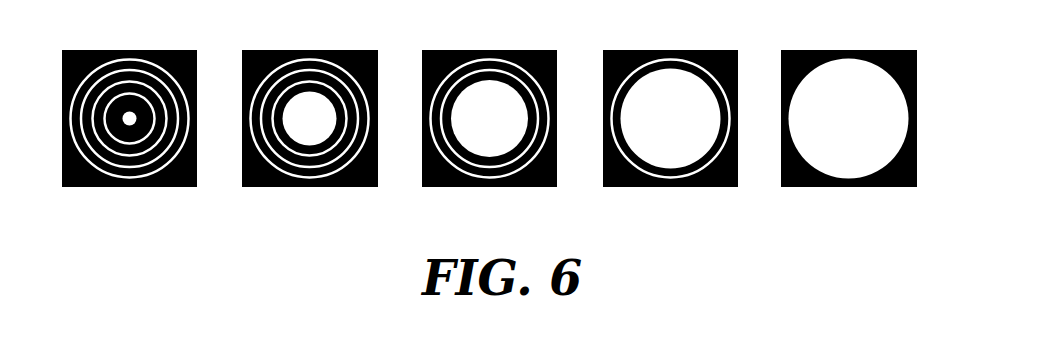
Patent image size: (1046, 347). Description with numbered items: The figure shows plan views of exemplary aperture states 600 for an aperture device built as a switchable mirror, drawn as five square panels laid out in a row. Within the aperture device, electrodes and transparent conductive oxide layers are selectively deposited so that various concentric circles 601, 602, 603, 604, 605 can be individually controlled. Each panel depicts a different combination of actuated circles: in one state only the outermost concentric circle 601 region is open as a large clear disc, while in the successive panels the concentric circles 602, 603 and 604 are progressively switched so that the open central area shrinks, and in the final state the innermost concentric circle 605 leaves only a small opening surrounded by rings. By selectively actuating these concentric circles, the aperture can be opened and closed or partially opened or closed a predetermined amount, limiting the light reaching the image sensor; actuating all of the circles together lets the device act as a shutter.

The aperture states 600 is at (255, 247).
The concentric circle 601 is at (848, 120).
The concentric circle 602 is at (670, 120).
The concentric circle 603 is at (490, 120).
The concentric circle 604 is at (310, 120).
The concentric circle 605 is at (130, 120).